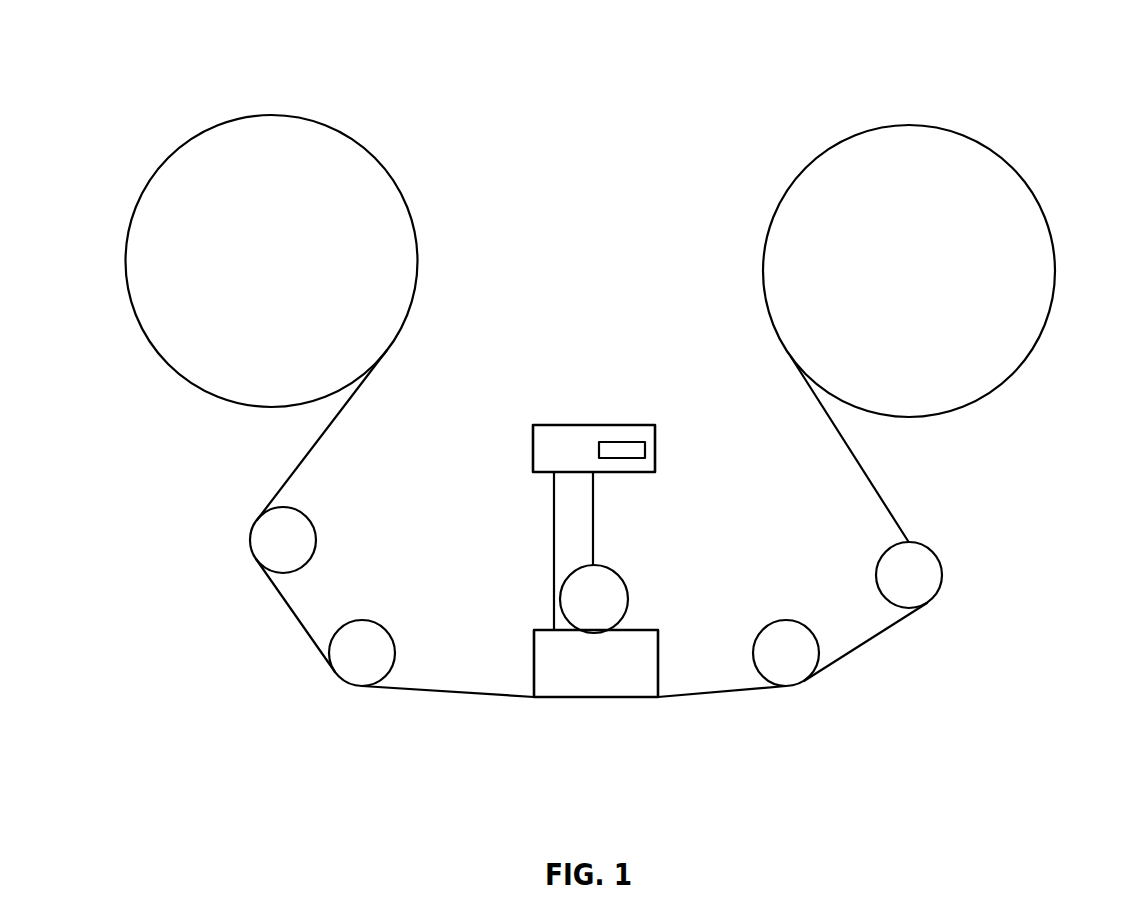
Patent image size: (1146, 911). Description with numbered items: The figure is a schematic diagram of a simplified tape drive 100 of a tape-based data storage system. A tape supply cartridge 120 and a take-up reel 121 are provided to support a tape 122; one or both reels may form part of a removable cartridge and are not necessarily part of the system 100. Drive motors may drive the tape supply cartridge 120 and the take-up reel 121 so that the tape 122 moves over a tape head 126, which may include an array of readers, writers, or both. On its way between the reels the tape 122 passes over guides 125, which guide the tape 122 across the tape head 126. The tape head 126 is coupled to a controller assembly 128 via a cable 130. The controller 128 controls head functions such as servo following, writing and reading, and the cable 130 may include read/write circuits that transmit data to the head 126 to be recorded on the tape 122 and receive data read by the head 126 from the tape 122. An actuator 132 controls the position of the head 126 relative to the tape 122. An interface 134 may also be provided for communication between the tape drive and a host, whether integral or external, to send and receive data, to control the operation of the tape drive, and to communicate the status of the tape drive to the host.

The tape drive 100 is at (232, 468).
The tape supply cartridge 120 is at (414, 232).
The take-up reel 121 is at (1000, 390).
The tape 122 is at (457, 695).
The guides 125 is at (362, 620).
The tape head 126 is at (658, 665).
The controller assembly 128 is at (593, 423).
The cable 130 is at (554, 597).
The actuator 132 is at (617, 573).
The interface 134 is at (636, 442).